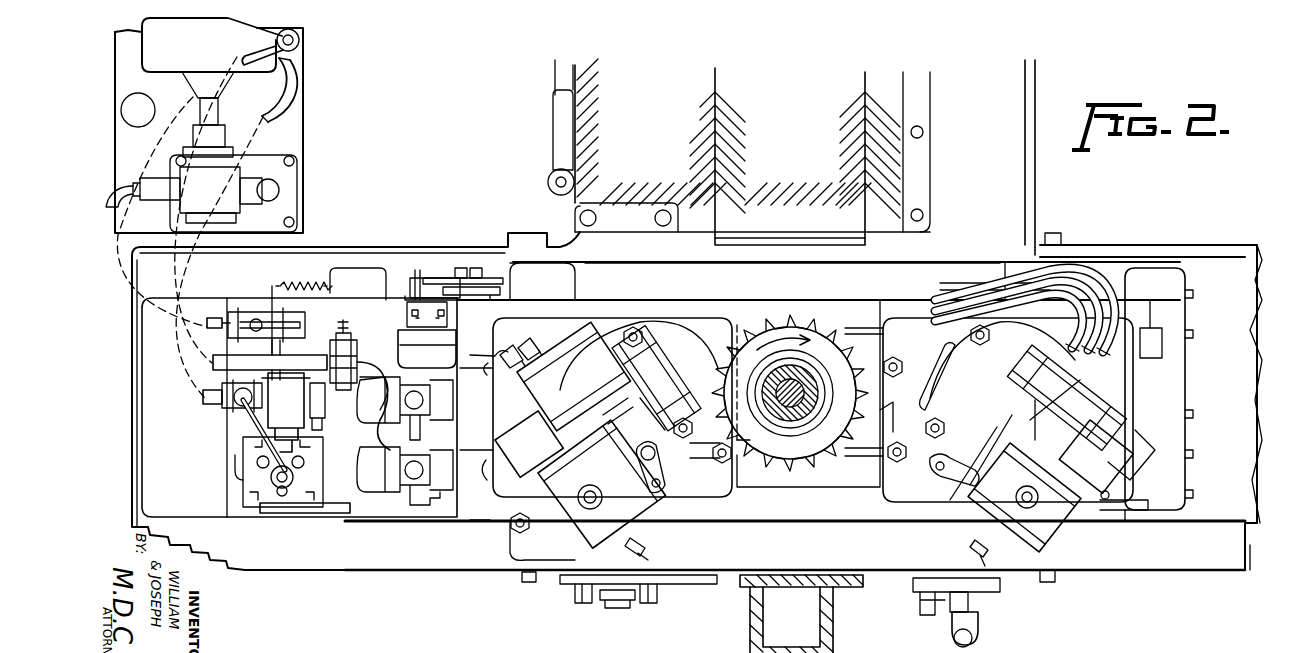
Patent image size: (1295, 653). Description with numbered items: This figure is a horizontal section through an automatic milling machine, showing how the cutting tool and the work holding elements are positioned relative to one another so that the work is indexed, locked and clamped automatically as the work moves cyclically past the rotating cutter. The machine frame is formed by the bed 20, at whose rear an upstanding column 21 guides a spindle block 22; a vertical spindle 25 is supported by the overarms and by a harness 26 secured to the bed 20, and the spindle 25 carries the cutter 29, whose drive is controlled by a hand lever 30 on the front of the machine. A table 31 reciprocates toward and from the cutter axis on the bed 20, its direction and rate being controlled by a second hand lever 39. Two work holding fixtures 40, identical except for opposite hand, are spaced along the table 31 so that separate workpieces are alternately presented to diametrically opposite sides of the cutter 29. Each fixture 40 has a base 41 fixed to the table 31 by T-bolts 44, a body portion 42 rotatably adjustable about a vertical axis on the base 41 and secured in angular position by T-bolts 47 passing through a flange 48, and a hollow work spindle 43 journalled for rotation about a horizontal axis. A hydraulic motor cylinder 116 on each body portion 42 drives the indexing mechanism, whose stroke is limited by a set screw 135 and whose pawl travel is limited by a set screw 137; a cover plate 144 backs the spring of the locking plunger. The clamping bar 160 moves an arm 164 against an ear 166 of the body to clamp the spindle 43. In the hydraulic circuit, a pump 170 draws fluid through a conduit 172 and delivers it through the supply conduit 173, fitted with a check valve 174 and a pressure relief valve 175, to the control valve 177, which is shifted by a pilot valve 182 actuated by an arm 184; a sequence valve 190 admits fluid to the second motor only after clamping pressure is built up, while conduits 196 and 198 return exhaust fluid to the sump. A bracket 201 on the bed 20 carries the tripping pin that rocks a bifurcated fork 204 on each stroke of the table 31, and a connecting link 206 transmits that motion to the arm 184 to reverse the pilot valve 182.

The bed 20 is at (545, 575).
The upstanding column 21 is at (905, 162).
The spindle block 22 is at (752, 152).
The vertical spindle 25 is at (770, 424).
The harness 26 is at (801, 614).
The cutter 29 is at (815, 325).
The hand lever 30 is at (950, 628).
The table 31 is at (818, 523).
The hand lever 39 is at (980, 638).
The work holding fixture 40 is at (814, 442).
The base 41 is at (690, 325).
The body portion 42 is at (616, 358).
The hollow work spindle 43 is at (1135, 470).
The T-bolt 44 is at (478, 342).
The T-bolt 47 is at (910, 338).
The flange 48 is at (935, 470).
The cylinder 116 is at (555, 362).
The set screw 135 is at (648, 556).
The set screw 137 is at (1125, 355).
The cover plate 144 is at (530, 425).
The clamping bar 160 is at (668, 480).
The arm 164 is at (615, 483).
The ear 166 is at (797, 434).
The motor driven pump 170 is at (236, 175).
The conduit 172 is at (276, 186).
The motor supply conduit 173 is at (112, 190).
The check valve 174 is at (275, 308).
The pressure relief valve 175 is at (300, 402).
The valve 177 is at (258, 477).
The pilot valve 182 is at (398, 315).
The arm 184 is at (415, 270).
The sequence valve 190 is at (440, 415).
The conduit 196 is at (297, 96).
The conduit 198 is at (262, 50).
The bracket 201 is at (468, 298).
The bifurcated fork 204 is at (480, 284).
The connecting link 206 is at (459, 268).